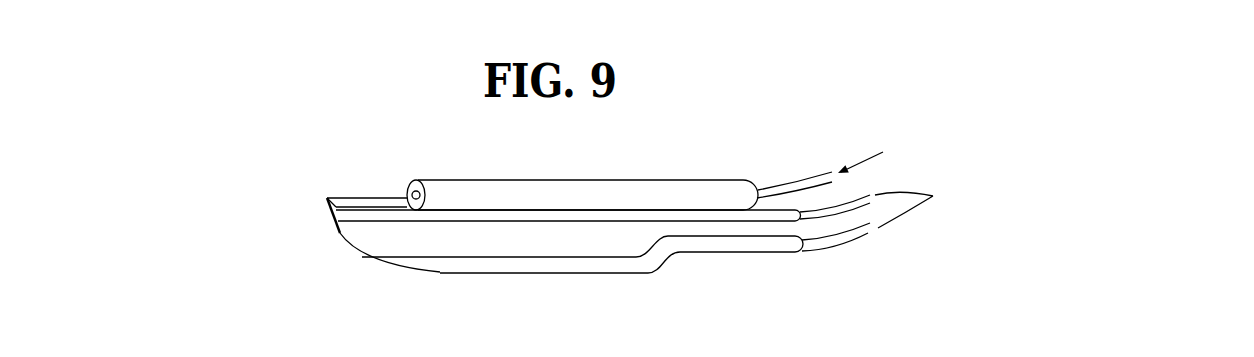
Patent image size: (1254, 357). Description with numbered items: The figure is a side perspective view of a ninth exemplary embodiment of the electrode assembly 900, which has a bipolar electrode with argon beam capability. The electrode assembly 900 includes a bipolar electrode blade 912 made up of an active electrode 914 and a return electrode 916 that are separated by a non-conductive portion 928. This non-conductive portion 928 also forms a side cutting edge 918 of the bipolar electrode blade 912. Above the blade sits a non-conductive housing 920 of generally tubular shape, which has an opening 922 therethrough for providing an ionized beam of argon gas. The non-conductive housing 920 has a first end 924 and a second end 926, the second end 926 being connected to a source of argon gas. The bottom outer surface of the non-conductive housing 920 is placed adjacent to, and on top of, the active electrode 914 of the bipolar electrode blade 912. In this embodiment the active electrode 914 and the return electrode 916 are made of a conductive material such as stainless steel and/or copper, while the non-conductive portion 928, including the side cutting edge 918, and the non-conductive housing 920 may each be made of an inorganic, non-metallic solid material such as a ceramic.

The electrode assembly 900 is at (729, 115).
The bipolar electrode blade 912 is at (640, 237).
The active electrode 914 is at (357, 205).
The return electrode 916 is at (440, 275).
The side cutting edge 918 is at (338, 239).
The non-conductive housing 920 is at (621, 174).
The opening 922 is at (423, 183).
The first end 924 is at (413, 191).
The second end 926 is at (752, 180).
The non-conductive portion 928 is at (538, 245).